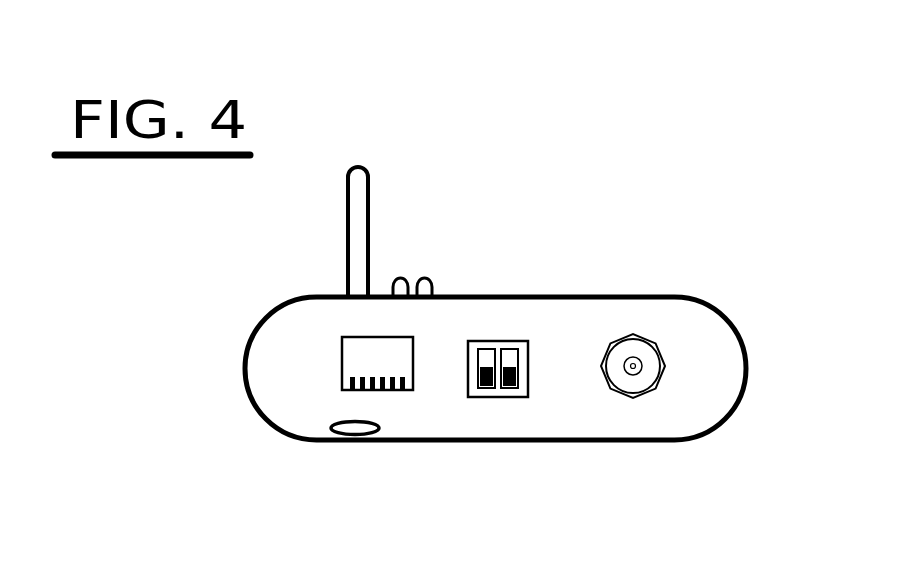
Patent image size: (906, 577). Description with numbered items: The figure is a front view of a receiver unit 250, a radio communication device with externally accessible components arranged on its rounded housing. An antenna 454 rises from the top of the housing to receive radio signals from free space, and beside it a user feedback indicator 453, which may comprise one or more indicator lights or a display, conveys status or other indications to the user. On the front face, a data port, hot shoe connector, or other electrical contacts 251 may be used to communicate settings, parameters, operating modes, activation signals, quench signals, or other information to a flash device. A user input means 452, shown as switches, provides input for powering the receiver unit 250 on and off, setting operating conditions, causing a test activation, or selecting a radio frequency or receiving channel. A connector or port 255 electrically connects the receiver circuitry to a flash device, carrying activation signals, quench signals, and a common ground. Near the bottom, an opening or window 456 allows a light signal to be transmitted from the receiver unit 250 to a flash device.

The receiver unit 250 is at (213, 427).
The data port, hot shoe connector, or other electrical contacts 251 is at (328, 335).
The connector or port 255 is at (653, 332).
The user input means 452 is at (513, 332).
The user feedback indicator 453 is at (427, 263).
The antenna 454 is at (373, 170).
The opening or window 456 is at (328, 417).